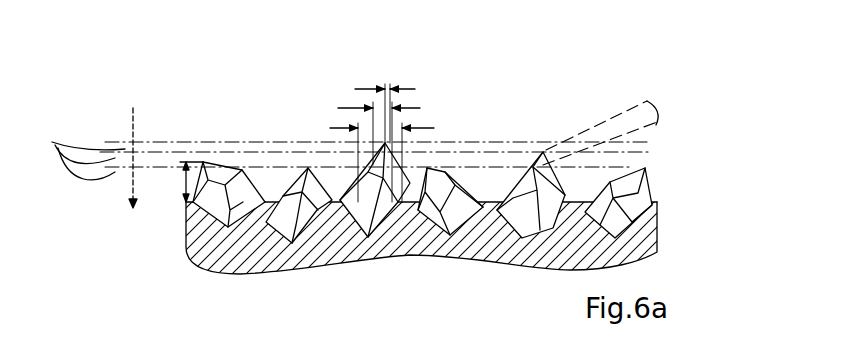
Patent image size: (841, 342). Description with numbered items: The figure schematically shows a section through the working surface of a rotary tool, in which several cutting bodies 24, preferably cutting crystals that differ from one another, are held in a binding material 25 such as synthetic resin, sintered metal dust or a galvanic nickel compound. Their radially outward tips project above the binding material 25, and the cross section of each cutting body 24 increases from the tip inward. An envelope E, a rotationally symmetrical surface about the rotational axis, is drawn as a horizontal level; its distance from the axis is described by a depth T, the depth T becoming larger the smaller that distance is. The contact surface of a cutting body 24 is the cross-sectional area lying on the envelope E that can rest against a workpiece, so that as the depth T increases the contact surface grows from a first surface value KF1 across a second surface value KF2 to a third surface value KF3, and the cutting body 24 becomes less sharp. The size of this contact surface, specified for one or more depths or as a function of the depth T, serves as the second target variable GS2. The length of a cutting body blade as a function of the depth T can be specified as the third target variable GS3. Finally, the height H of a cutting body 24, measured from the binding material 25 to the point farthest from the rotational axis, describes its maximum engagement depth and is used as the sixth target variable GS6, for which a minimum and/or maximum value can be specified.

The cutting body 24 is at (318, 240).
The binding material 25 is at (184, 250).
The envelope E is at (85, 149).
The depth T is at (123, 161).
The height H is at (184, 182).
The first surface value KF1 is at (390, 104).
The second surface value KF2 is at (410, 107).
The third surface value KF3 is at (417, 126).
The second target variable GS2 is at (531, 85).
The third target variable GS3 is at (685, 80).
The sixth target variable GS6 is at (157, 211).